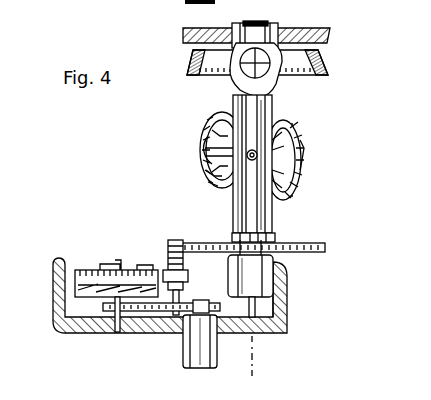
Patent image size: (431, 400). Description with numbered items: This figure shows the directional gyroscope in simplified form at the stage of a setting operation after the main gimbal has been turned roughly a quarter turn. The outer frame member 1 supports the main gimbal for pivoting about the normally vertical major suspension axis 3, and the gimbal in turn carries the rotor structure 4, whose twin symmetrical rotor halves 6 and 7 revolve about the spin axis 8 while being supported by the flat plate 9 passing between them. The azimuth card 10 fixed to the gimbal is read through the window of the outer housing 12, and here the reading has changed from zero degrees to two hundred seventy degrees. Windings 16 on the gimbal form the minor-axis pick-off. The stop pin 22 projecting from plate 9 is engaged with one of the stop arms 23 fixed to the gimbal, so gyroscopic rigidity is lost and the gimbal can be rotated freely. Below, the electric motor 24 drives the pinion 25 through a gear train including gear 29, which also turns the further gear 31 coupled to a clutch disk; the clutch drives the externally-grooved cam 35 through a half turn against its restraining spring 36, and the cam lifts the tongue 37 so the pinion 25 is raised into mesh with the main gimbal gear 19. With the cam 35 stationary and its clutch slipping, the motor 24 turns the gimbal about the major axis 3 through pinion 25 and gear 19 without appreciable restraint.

The outer frame member 1 is at (329, 39).
The major suspension axis 3 is at (258, 19).
The rotor structure 4 is at (336, 138).
The rotor half 6 is at (223, 133).
The rotor half 7 is at (277, 183).
The spin axis 8 is at (230, 115).
The flat plate 9 is at (312, 143).
The azimuth card 10 is at (322, 78).
The outer housing 12 is at (262, 88).
The windings 16 is at (233, 223).
The main gimbal gear 19 is at (302, 252).
The stop pin 22 is at (211, 176).
The stop arms 23 is at (208, 149).
The electric motor 24 is at (188, 355).
The pinion 25 is at (168, 252).
The gear 29 is at (158, 315).
The gear 31 is at (112, 318).
The cam 35 is at (53, 279).
The spring 36 is at (93, 268).
The tongue 37 is at (188, 283).